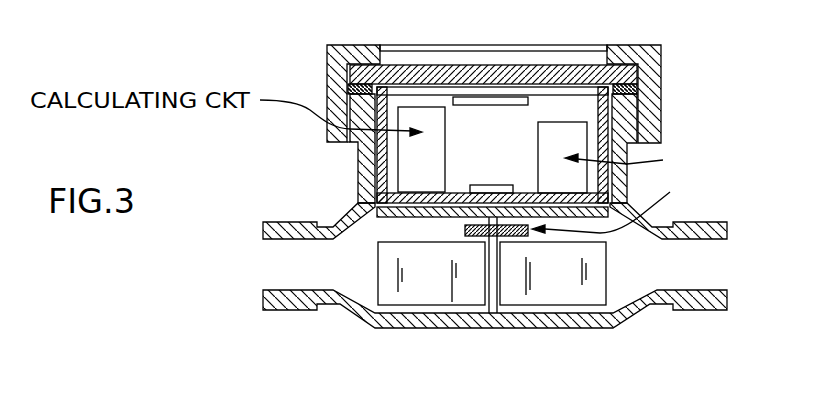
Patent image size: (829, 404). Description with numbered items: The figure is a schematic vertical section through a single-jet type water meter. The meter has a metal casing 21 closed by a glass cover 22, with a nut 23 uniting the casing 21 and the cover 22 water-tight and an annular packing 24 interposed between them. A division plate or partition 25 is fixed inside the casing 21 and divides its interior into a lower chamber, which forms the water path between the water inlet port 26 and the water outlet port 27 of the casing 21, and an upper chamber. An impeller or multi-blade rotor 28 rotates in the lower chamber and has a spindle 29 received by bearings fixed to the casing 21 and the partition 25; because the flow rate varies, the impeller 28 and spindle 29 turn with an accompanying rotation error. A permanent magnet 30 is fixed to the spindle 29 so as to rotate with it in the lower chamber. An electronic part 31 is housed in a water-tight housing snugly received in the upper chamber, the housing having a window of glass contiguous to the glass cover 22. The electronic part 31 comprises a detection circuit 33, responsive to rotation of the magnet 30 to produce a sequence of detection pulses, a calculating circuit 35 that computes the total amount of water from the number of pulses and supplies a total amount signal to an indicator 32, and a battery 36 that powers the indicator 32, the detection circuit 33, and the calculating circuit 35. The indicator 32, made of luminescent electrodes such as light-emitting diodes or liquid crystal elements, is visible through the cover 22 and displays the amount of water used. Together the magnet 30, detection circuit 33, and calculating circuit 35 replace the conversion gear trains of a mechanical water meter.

The metal casing 21 is at (351, 316).
The glass cover 22 is at (550, 67).
The nut 23 is at (662, 116).
The annular packing 24 is at (637, 92).
The division plate or partition 25 is at (432, 218).
The water inlet port 26 is at (265, 290).
The water outlet port 27 is at (697, 290).
The impeller or multi-blade rotor 28 is at (378, 272).
The spindle 29 is at (499, 285).
The permanent magnet 30 is at (514, 237).
The electronic part 31 is at (476, 142).
The indicator 32 is at (489, 105).
The detection circuit 33 is at (500, 187).
The calculating circuit 35 is at (446, 166).
The battery 36 is at (568, 124).